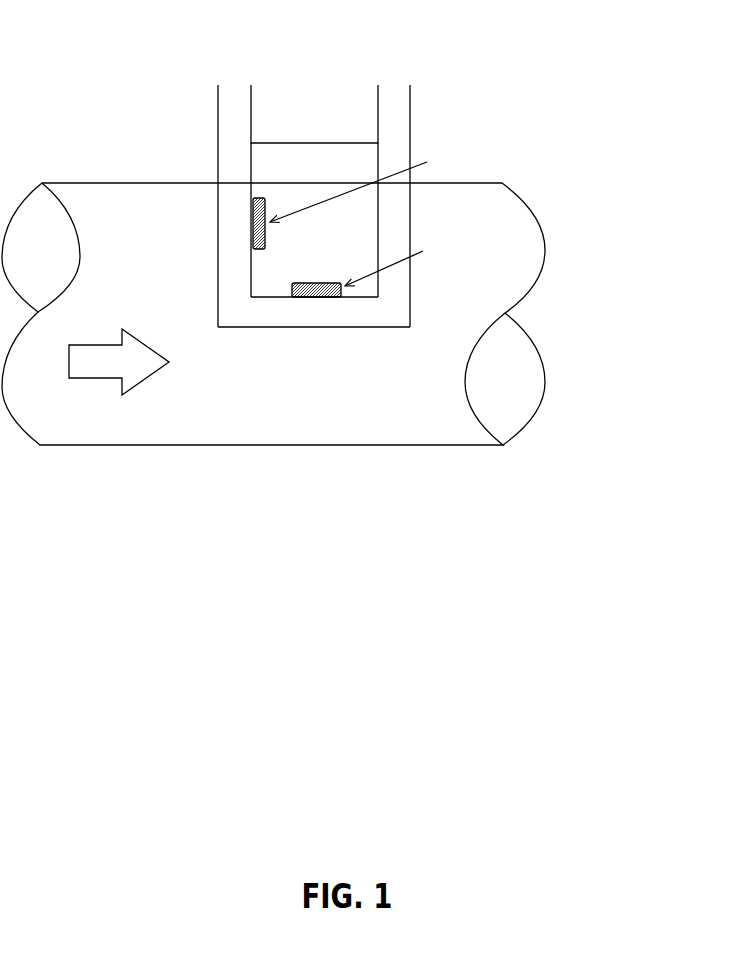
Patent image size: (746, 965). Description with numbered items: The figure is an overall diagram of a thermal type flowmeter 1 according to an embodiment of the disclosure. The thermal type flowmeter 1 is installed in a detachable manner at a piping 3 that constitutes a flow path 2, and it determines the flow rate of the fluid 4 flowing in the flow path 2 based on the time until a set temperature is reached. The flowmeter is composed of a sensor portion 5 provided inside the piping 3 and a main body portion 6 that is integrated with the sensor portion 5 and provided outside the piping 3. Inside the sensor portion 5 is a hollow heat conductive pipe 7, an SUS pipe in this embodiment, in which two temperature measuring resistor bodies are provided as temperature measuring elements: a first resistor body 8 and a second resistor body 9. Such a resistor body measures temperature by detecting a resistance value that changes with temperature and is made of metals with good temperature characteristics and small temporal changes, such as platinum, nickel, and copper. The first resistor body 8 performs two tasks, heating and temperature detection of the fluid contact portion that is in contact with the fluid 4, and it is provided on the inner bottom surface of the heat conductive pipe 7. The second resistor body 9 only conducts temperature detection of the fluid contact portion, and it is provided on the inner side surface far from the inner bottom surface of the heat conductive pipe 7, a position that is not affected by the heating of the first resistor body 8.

The thermal type flowmeter 1 is at (438, 196).
The flow path 2 is at (356, 411).
The piping 3 is at (73, 183).
The fluid 4 is at (102, 345).
The sensor portion 5 is at (218, 230).
The main body portion 6 is at (218, 118).
The heat conductive pipe 7 is at (272, 327).
The first resistor body 8 is at (318, 283).
The second resistor body 9 is at (266, 205).